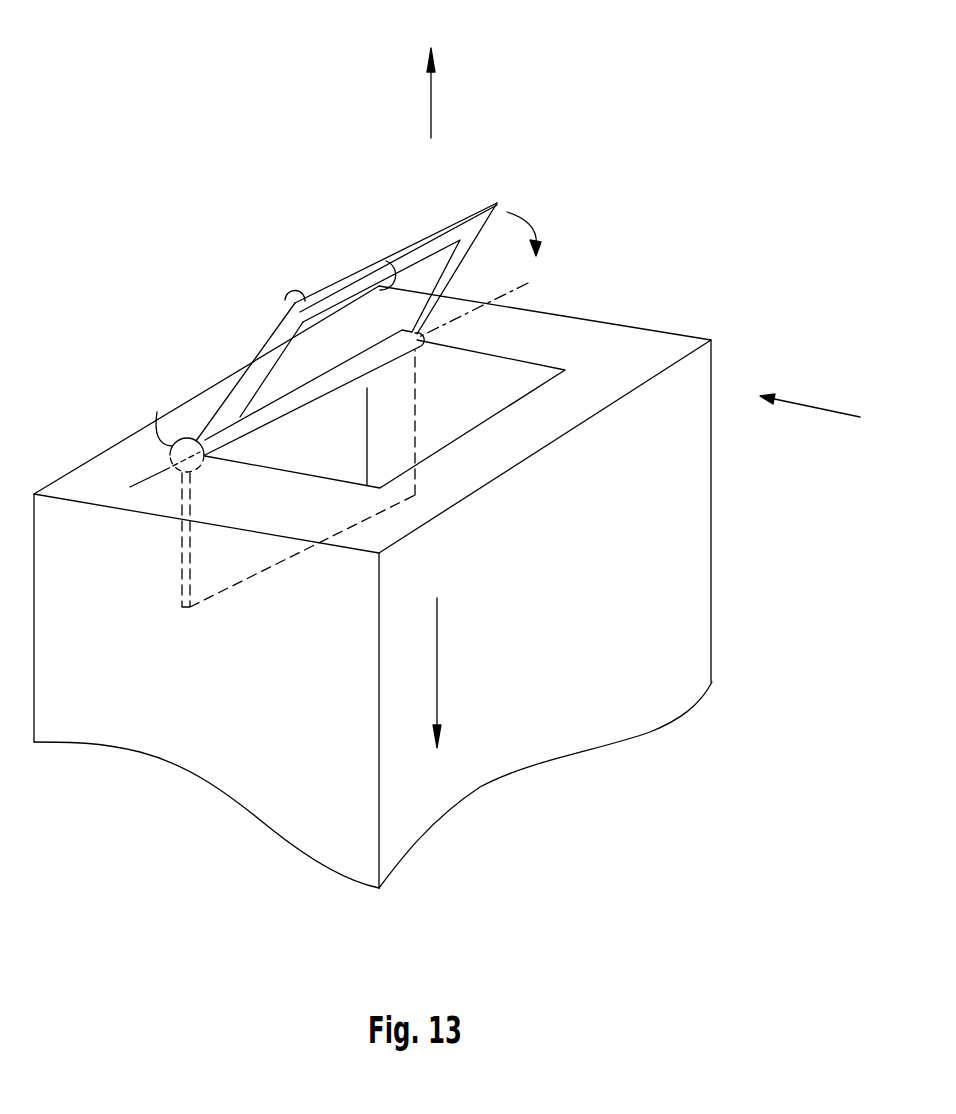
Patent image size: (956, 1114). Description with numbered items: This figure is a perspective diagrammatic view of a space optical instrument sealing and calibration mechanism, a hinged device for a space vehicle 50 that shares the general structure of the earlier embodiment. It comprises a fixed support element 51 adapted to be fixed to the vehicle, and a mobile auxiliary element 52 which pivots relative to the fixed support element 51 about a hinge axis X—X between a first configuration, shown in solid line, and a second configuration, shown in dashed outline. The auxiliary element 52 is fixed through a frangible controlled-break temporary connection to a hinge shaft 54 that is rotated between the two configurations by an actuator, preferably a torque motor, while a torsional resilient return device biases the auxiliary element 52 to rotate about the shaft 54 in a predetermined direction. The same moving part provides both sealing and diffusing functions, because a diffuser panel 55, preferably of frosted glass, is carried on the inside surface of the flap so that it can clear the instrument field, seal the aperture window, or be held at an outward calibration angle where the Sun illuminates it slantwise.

The space vehicle 50 is at (733, 245).
The fixed support element 51 is at (713, 537).
The mobile auxiliary element 52 is at (285, 300).
The hinge shaft 54 is at (157, 412).
The diffuser panel 55 is at (390, 262).